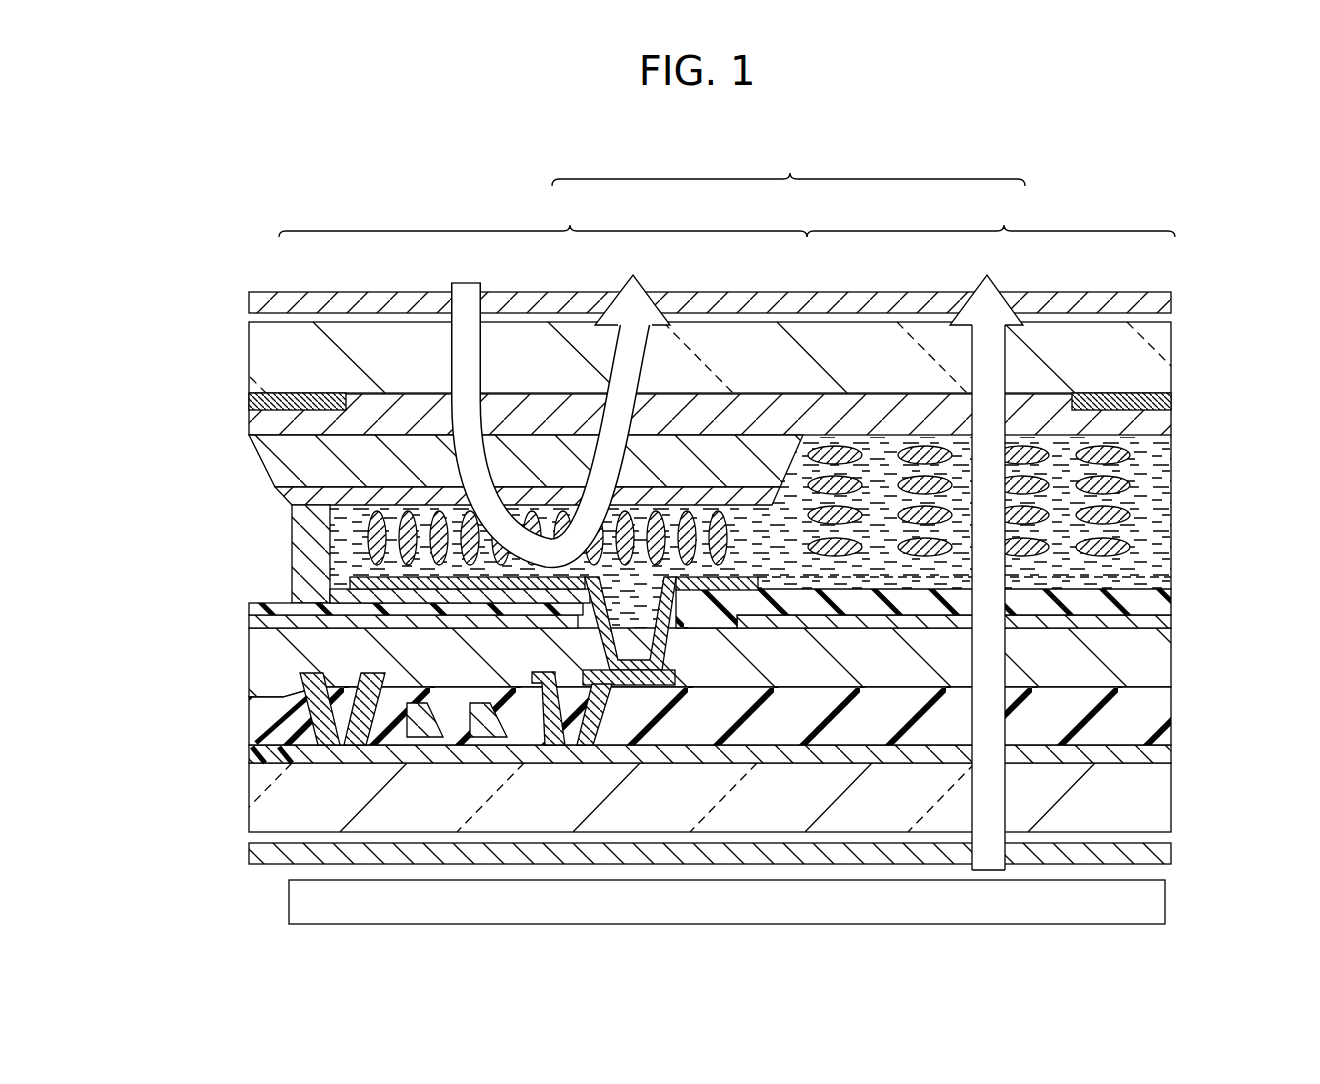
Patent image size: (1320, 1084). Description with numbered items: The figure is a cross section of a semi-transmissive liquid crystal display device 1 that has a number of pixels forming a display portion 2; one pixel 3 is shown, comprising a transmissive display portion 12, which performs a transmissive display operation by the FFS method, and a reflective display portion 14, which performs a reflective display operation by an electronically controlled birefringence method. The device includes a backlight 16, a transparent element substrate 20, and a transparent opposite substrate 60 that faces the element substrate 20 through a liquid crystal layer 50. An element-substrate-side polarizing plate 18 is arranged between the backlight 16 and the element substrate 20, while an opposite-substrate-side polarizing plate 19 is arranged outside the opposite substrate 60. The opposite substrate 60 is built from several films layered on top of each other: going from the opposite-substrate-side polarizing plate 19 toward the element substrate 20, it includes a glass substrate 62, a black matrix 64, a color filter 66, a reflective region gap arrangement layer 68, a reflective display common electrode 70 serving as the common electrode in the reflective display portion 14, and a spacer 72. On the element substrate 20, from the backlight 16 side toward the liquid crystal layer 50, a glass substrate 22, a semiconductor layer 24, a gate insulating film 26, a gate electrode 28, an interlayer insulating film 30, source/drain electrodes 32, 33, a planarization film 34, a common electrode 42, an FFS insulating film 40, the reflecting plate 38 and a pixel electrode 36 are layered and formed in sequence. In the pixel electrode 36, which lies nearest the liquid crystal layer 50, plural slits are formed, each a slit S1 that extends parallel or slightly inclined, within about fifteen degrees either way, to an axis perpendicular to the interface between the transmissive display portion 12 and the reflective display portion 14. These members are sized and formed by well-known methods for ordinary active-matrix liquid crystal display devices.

The liquid crystal display device 1 is at (222, 272).
The display portion 2 is at (1172, 278).
The pixel 3 is at (788, 167).
The transmissive display portion 12 is at (991, 218).
The reflective display portion 14 is at (543, 218).
The backlight 16 is at (1166, 900).
The element-substrate-side polarizing plate 18 is at (1172, 848).
The opposite-substrate-side polarizing plate 19 is at (1172, 303).
The element substrate 20 is at (1188, 698).
The glass substrate 22 is at (257, 822).
The semiconductor layer 24 is at (317, 762).
The gate insulating film 26 is at (265, 752).
The gate electrode 28 is at (483, 725).
The interlayer insulating film 30 is at (257, 728).
The source/drain electrode 32 is at (305, 678).
The source/drain electrode 33 is at (667, 677).
The planarization film 34 is at (252, 662).
The pixel electrode 36 is at (345, 577).
The reflecting plate 38 is at (350, 593).
The FFS insulating film 40 is at (250, 608).
The common electrode 42 is at (250, 623).
The liquid crystal layer 50 is at (1172, 490).
The opposite substrate 60 is at (1190, 379).
The glass substrate 62 is at (252, 343).
The black matrix 64 is at (250, 402).
The color filter 66 is at (250, 422).
The reflective region gap arrangement layer 68 is at (262, 460).
The reflective display common electrode 70 is at (285, 497).
The spacer 72 is at (300, 522).
The slit S1 is at (1172, 567).